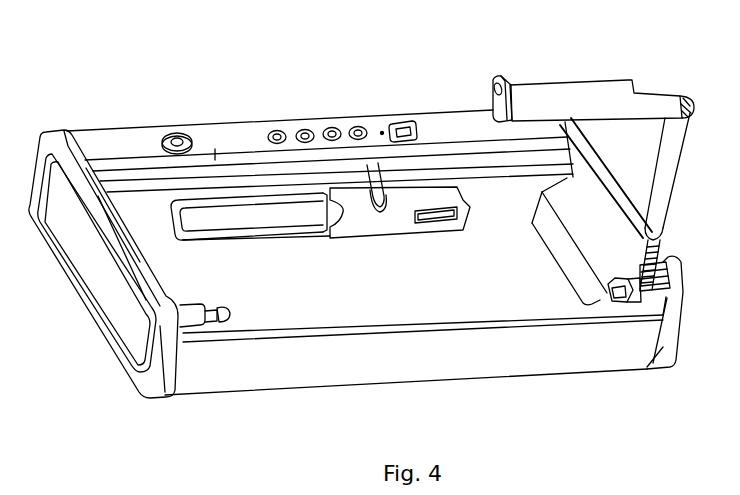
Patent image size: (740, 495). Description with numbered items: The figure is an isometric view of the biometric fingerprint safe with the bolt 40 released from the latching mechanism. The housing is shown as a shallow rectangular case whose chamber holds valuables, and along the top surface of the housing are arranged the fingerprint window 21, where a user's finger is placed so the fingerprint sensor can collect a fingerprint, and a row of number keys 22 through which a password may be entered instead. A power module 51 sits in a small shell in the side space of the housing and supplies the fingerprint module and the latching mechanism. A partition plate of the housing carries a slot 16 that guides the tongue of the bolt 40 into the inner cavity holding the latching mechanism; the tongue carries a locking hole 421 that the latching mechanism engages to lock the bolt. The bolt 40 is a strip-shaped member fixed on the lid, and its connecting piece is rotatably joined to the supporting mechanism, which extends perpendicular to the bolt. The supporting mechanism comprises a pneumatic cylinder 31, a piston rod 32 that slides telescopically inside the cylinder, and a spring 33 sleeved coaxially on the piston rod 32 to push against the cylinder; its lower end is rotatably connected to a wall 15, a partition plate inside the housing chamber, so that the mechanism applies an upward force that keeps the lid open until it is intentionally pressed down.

The wall 15 is at (597, 298).
The slot 16 is at (377, 167).
The fingerprint window 21 is at (397, 121).
The number keys 22 is at (304, 130).
The pneumatic cylinder 31 is at (678, 158).
The piston rod 32 is at (660, 233).
The spring 33 is at (664, 250).
The bolt 40 is at (580, 83).
The power module 51 is at (222, 217).
The locking hole 421 is at (491, 87).